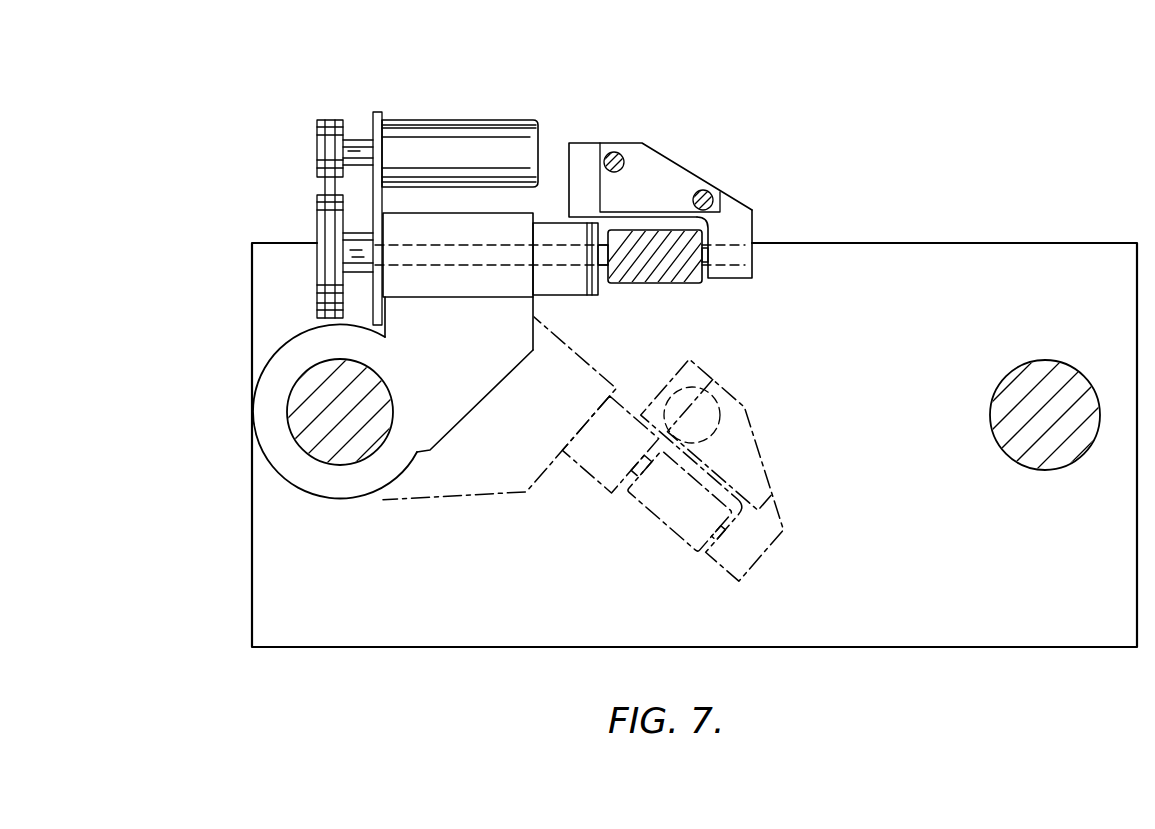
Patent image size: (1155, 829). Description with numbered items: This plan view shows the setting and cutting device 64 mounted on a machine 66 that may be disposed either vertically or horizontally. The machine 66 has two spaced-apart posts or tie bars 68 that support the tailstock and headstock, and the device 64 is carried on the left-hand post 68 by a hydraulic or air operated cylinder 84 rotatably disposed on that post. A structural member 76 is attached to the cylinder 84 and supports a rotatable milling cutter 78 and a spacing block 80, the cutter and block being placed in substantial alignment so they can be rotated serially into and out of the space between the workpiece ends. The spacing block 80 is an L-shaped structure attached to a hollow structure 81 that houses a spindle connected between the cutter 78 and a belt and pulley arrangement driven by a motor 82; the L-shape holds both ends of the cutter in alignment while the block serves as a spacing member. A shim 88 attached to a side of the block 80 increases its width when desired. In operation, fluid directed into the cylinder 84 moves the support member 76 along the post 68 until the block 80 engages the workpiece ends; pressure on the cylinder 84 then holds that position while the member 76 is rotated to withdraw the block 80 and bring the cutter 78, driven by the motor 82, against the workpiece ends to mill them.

The setting and cutting device 64 is at (695, 209).
The machine 66 is at (929, 592).
The post or tie bar 68 is at (297, 422).
The structural member 76 is at (490, 383).
The rotatable milling cutter 78 is at (684, 278).
The spacing block 80 is at (737, 223).
The hollow structure 81 is at (498, 220).
The motor 82 is at (422, 133).
The hydraulic or air operated cylinder 84 is at (340, 487).
The shim 88 is at (645, 162).